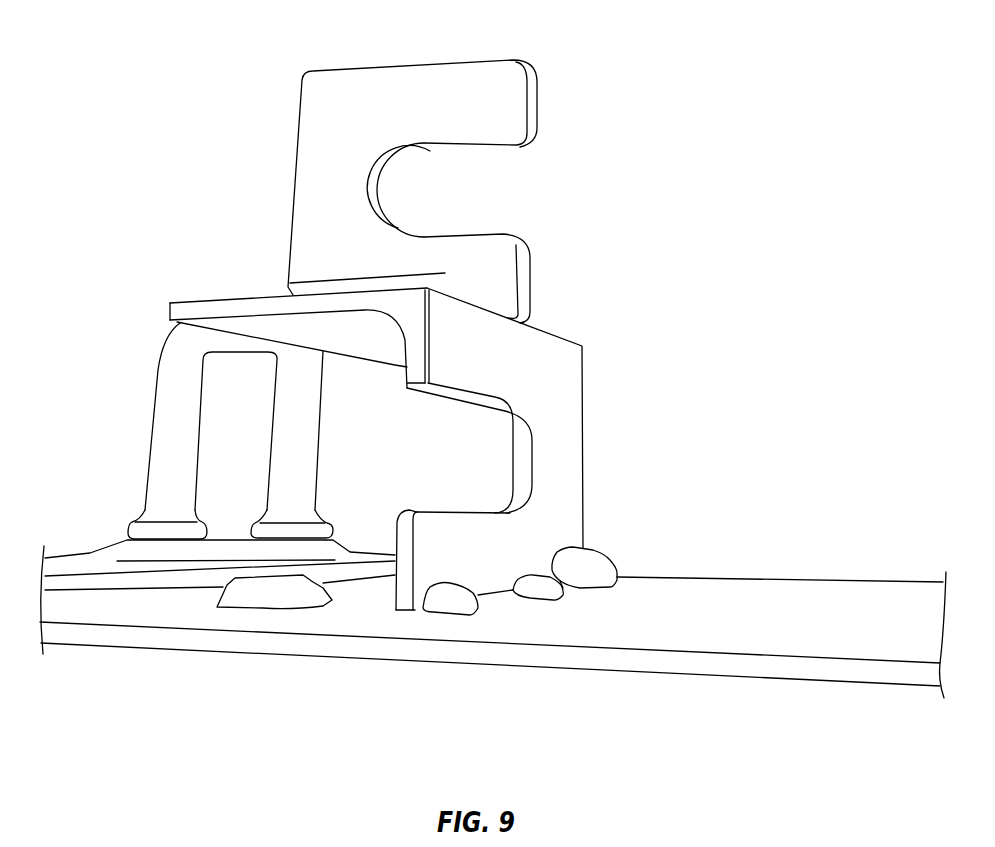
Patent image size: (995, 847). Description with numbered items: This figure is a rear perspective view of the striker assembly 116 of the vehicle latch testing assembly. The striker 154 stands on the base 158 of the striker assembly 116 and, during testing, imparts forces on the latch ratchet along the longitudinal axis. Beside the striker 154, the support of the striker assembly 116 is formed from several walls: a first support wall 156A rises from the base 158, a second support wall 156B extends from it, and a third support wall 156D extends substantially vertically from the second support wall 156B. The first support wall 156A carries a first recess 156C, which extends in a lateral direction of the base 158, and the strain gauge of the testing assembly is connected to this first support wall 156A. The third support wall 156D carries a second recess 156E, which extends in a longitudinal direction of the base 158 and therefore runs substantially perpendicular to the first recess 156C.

The striker assembly 116 is at (582, 341).
The striker 154 is at (150, 423).
The first support wall 156A is at (573, 495).
The second support wall 156B is at (190, 300).
The first recess 156C is at (470, 400).
The third support wall 156D is at (422, 70).
The second recess 156E is at (470, 153).
The base 158 is at (775, 575).